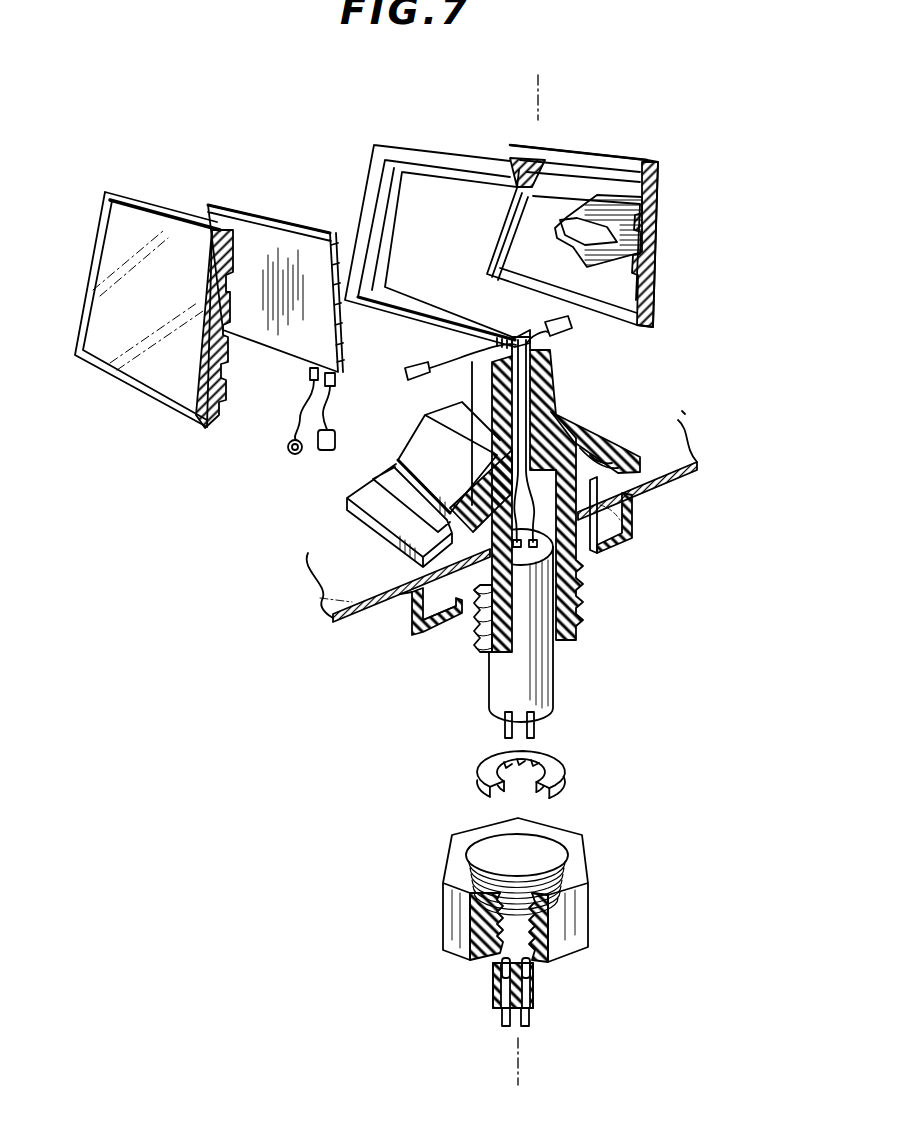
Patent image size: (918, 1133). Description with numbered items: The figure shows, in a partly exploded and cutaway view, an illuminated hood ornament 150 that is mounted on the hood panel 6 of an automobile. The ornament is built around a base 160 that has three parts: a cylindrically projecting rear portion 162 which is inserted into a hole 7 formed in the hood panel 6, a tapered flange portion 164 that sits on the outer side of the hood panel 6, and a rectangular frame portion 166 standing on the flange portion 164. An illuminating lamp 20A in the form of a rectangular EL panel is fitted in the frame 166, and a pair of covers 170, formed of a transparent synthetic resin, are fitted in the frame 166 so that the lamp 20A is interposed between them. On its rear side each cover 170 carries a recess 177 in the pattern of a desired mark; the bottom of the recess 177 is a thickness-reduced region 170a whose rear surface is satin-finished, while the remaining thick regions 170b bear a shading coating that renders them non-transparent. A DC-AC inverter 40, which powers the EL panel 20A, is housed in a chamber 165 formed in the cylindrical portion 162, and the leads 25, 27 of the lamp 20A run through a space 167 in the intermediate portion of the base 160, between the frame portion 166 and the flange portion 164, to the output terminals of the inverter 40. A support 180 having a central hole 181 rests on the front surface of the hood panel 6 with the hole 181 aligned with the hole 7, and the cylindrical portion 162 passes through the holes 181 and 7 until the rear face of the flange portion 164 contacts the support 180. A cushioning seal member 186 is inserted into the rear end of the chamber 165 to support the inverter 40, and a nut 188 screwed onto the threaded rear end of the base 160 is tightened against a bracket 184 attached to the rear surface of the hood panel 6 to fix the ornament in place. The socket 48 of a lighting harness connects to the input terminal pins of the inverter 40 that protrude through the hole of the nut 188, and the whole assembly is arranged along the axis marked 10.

The hood panel 6 is at (318, 598).
The hole 7 is at (617, 537).
The axis 10 is at (541, 93).
The illuminating lamp 20A is at (273, 232).
The lead 25 is at (293, 428).
The lead 27 is at (336, 427).
The DC-AC inverter 40 is at (497, 690).
The socket 48 is at (497, 983).
The hood ornament 150 is at (598, 402).
The base 160 is at (584, 570).
The cylindrically projecting rear portion 162 is at (473, 587).
The tapered flange portion 164 is at (603, 432).
The chamber 165 is at (592, 555).
The rectangular frame portion 166 is at (446, 150).
The space 167 is at (535, 452).
The cover 170 is at (158, 385).
The thickness-reduced region 170a is at (214, 338).
The thick region 170b is at (212, 240).
The recess 177 is at (223, 332).
The support 180 is at (365, 510).
The central hole 181 is at (633, 492).
The bracket 184 is at (398, 617).
The cushioning seal member 186 is at (563, 770).
The nut 188 is at (582, 927).